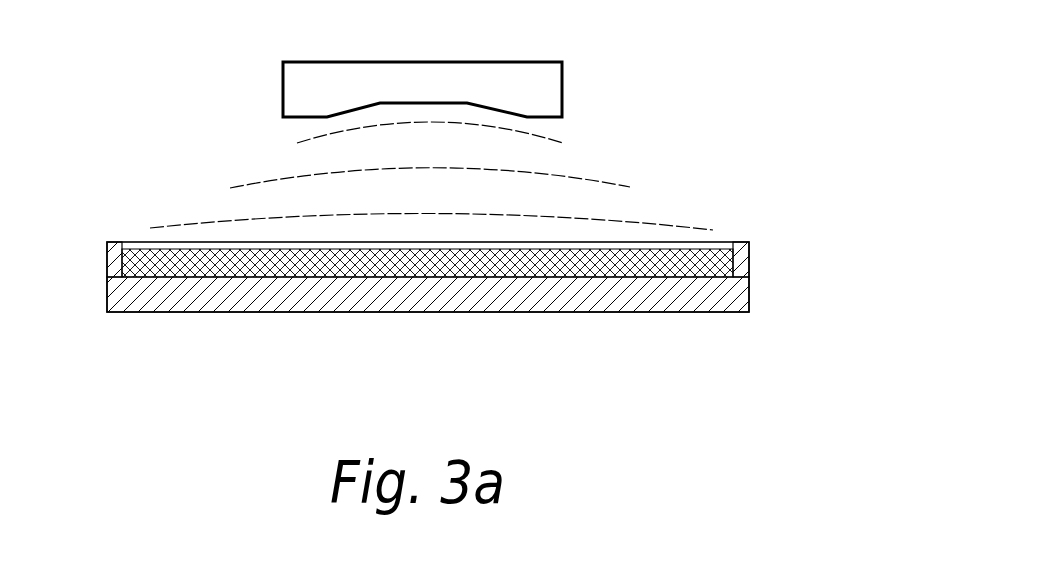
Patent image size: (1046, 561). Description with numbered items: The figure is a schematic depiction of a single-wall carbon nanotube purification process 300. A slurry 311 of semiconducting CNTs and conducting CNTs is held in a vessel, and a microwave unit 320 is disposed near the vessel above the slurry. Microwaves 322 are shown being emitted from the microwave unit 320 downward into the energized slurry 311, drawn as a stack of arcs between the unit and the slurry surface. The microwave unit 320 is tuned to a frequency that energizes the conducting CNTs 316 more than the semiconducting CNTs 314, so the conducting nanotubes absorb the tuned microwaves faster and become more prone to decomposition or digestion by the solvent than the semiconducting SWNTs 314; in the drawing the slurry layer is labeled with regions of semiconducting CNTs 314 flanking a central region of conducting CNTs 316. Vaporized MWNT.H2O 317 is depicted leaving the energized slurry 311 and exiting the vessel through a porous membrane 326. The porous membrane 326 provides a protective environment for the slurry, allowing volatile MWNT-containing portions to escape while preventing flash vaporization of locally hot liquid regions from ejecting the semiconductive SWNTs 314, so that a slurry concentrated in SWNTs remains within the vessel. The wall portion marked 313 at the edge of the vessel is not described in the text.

The single-wall carbon nanotube purification process 300 is at (600, 67).
The microwave unit 320 is at (281, 78).
The microwaves 322 is at (160, 122).
The vaporized MWNT.H2O 317 is at (612, 179).
The slurry 311 is at (134, 263).
The left wall 313 is at (107, 249).
The porous membrane 326 is at (718, 247).
The semiconducting CNTs 314 is at (250, 265).
The conducting CNTs 316 is at (410, 262).